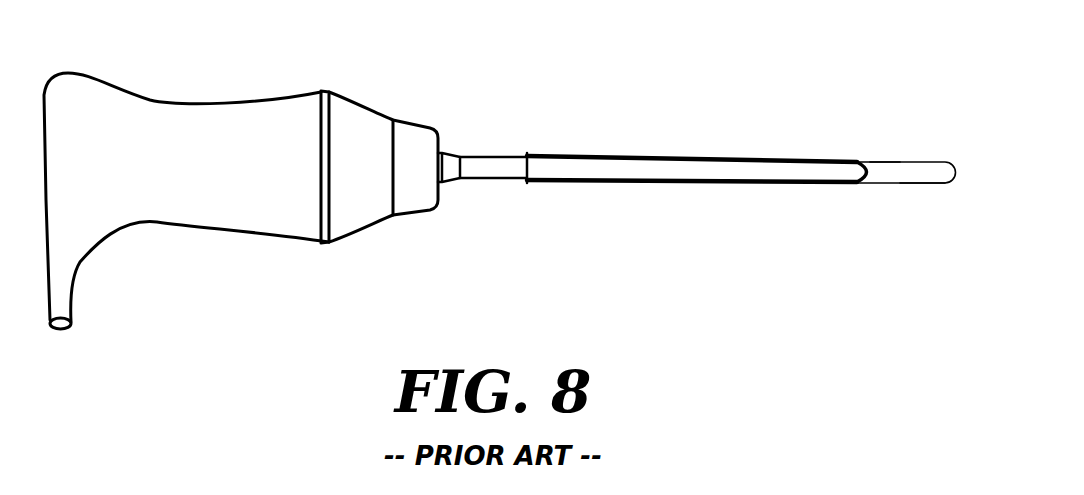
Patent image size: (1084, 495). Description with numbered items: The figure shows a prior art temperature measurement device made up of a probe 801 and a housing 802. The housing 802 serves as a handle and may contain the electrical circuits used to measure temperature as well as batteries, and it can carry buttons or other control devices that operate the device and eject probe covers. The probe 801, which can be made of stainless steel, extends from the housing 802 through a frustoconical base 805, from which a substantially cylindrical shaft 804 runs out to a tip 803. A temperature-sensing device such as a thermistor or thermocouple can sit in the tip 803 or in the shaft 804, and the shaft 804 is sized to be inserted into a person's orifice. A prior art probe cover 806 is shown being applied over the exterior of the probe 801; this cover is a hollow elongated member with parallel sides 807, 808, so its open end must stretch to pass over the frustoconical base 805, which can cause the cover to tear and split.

The probe 801 is at (501, 165).
The housing 802 is at (145, 132).
The tip 803 is at (715, 167).
The shaft 804 is at (568, 183).
The frustoconical base 805 is at (452, 173).
The prior art probe cover 806 is at (885, 128).
The parallel side 807 is at (925, 184).
The parallel side 808 is at (907, 162).